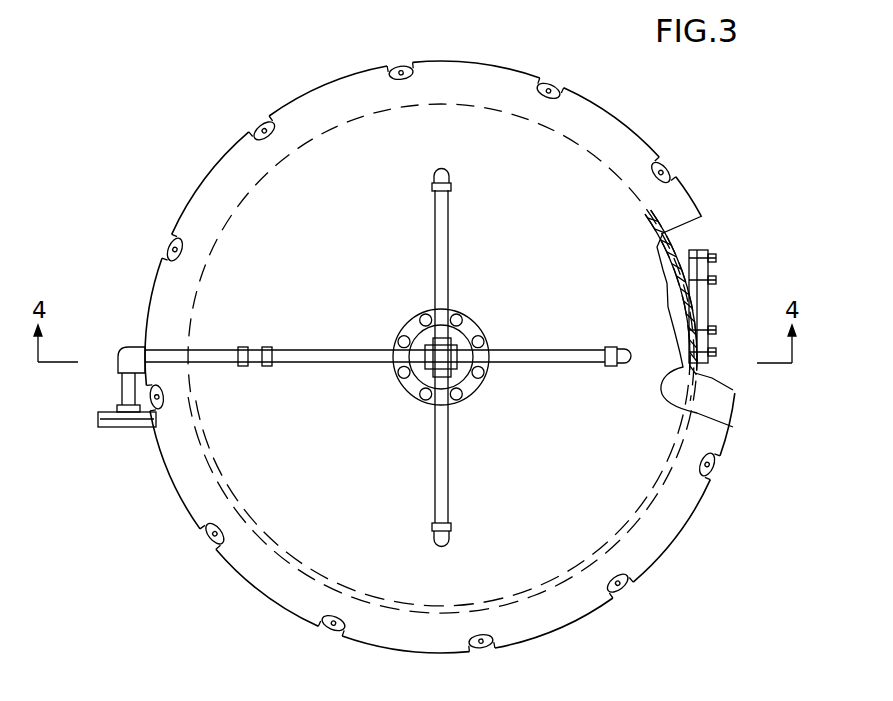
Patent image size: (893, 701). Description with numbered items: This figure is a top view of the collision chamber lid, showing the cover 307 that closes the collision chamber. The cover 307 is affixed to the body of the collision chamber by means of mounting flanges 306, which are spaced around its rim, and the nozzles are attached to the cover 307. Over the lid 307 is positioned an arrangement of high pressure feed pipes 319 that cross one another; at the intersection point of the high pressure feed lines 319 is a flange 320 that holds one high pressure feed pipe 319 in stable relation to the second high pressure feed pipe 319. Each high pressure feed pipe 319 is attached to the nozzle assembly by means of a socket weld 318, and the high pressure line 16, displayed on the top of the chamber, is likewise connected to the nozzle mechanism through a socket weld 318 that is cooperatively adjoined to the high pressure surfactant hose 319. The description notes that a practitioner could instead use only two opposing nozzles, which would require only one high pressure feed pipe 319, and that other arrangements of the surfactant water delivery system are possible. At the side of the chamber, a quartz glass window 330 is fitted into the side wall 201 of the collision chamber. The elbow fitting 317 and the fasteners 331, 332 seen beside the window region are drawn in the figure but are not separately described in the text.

The high pressure line 16 is at (100, 427).
The side wall 201 is at (733, 427).
The mounting flanges 306 is at (210, 528).
The cover 307 is at (178, 460).
The elbow 317 is at (118, 393).
The socket weld 318 is at (252, 349).
The high pressure feed pipe 319 is at (450, 210).
The flange 320 is at (470, 383).
The quartz glass window 330 is at (712, 300).
The upper bolts 331 is at (707, 252).
The lower bolts 332 is at (707, 363).